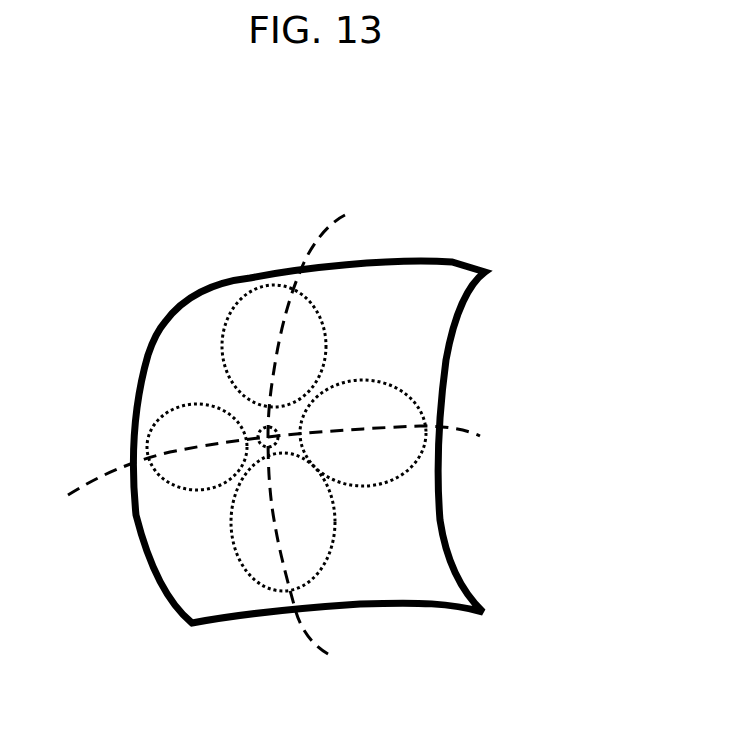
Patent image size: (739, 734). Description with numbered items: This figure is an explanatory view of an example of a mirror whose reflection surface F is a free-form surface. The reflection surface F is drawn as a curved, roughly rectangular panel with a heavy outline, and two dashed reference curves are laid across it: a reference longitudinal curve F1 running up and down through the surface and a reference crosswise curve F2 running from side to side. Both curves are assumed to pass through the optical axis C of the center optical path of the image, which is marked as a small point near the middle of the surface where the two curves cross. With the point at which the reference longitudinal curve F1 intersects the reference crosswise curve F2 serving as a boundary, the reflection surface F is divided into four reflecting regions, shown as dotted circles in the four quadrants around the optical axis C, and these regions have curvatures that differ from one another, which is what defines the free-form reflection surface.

The reflection surface F is at (428, 291).
The reference longitudinal curve F1 is at (311, 246).
The reference crosswise curve F2 is at (448, 425).
The optical axis C is at (270, 434).